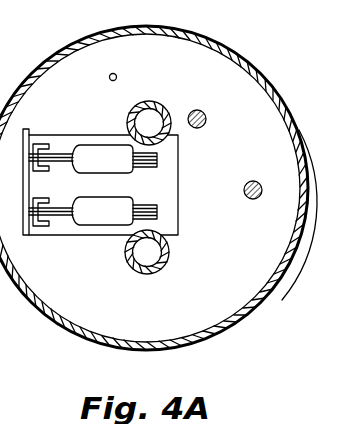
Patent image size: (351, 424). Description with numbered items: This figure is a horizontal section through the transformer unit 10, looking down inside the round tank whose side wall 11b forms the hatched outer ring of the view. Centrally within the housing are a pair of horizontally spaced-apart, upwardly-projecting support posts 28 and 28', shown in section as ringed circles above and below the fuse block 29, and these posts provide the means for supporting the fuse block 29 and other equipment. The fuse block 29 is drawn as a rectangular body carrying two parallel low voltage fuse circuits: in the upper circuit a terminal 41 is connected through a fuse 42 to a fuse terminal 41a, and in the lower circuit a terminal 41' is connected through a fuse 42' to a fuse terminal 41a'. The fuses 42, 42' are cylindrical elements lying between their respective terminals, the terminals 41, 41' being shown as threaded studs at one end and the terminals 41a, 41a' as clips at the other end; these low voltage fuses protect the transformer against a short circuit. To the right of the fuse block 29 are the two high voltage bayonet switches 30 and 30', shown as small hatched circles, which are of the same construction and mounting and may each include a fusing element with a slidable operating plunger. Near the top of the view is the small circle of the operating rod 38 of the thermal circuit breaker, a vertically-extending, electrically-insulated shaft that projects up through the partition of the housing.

The transformer unit 10 is at (313, 81).
The side wall 11b is at (292, 259).
The support post 28 is at (147, 269).
The support post 28' is at (149, 108).
The fuse block 29 is at (178, 203).
The bayonet switch 30 is at (264, 206).
The bayonet switch 30' is at (221, 113).
The operating rod 38 is at (117, 73).
The terminal 41 is at (171, 173).
The terminal 41' is at (176, 228).
The fuse terminal 41a is at (45, 137).
The fuse terminal 41a' is at (41, 233).
The fuse 42 is at (81, 136).
The fuse 42' is at (81, 230).